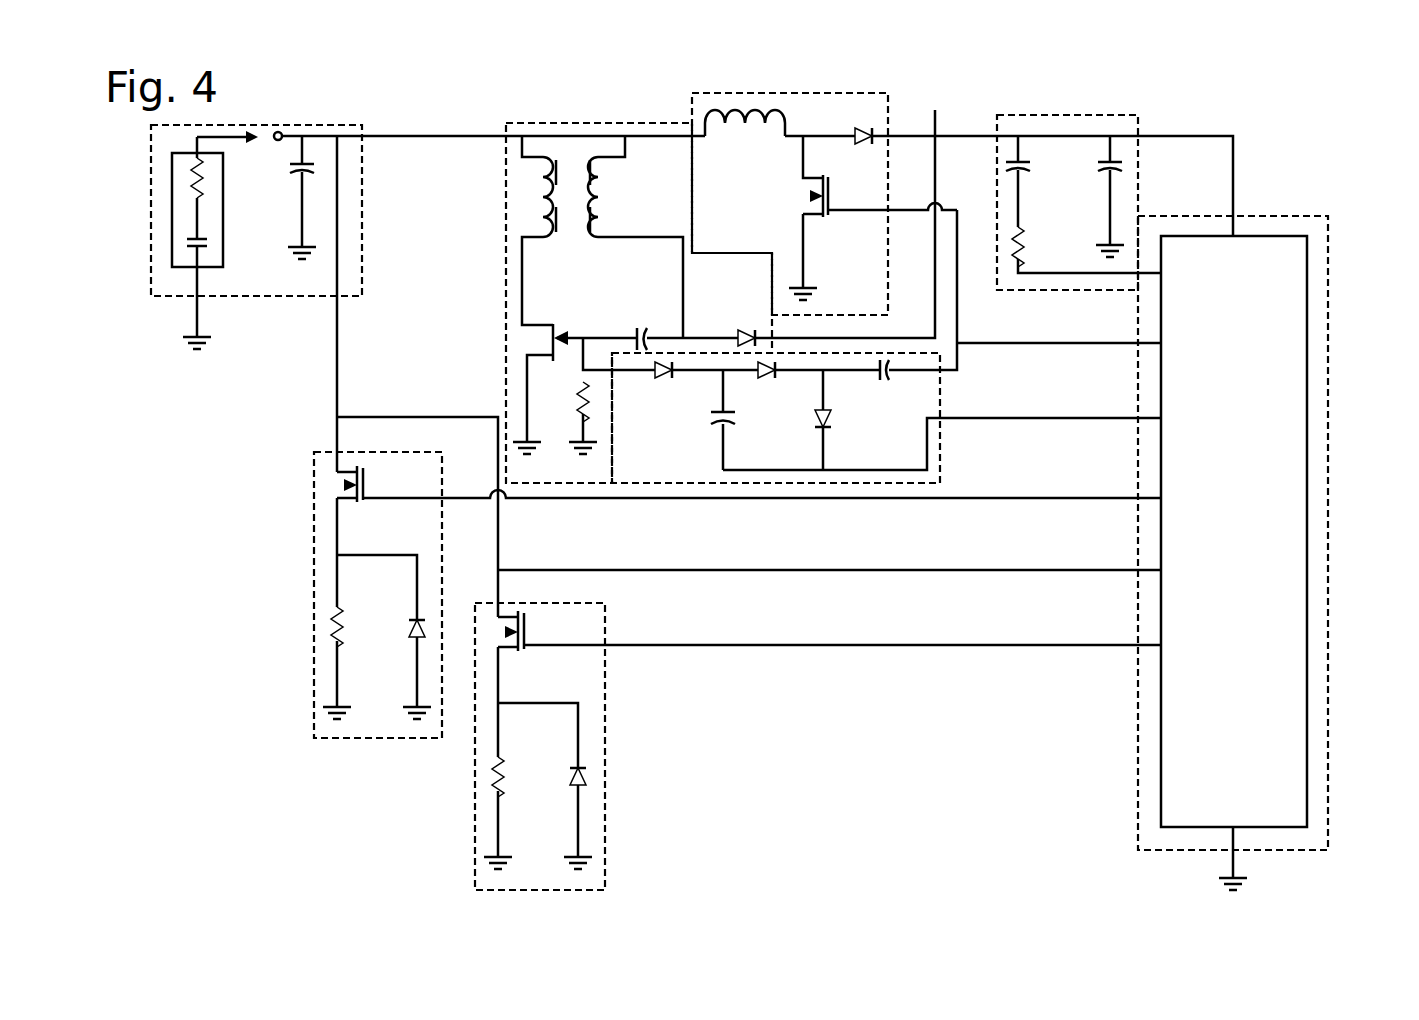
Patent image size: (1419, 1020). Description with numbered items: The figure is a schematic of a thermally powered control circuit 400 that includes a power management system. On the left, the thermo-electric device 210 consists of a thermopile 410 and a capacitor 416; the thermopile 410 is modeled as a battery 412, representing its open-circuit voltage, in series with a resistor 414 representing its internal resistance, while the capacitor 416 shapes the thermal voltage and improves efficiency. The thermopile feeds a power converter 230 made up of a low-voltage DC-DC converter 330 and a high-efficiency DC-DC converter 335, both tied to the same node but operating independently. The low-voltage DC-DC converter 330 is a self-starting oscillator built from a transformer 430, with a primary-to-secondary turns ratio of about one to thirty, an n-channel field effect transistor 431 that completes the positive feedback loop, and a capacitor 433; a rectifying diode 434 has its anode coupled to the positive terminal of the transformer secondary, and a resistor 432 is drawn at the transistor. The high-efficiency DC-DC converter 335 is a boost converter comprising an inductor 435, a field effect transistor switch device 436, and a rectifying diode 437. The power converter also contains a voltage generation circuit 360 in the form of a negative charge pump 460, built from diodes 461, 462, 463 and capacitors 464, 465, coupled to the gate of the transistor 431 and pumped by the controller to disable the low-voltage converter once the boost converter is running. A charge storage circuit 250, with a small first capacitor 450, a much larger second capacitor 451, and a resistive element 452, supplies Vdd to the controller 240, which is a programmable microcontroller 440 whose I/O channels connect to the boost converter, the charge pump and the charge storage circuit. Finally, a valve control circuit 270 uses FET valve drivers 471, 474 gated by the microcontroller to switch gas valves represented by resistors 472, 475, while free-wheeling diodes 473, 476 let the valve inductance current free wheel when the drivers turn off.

The thermally powered control circuit 400 is at (302, 826).
The thermo-electric device 210 is at (293, 102).
The power converter 230 is at (489, 102).
The low-voltage DC-DC converter 330 is at (604, 122).
The high-efficiency DC-DC converter 335 is at (875, 93).
The charge storage circuit 250 is at (1118, 115).
The controller 240 is at (1330, 835).
The valve control circuit 270 is at (474, 788).
The voltage generation circuit 360 is at (942, 465).
The negative charge pump 460 is at (663, 464).
The thermopile 410 is at (223, 245).
The battery 412 is at (205, 240).
The resistor 414 is at (205, 180).
The capacitor 416 is at (299, 172).
The transformer 430 is at (605, 240).
The field effect transistor 431 is at (552, 322).
The resistor 432 is at (580, 398).
The capacitor 433 is at (637, 330).
The rectifying diode 434 is at (738, 332).
The inductor 435 is at (768, 125).
The field effect transistor switch device 436 is at (808, 196).
The rectifying diode 437 is at (866, 145).
The programmable microcontroller 440 is at (1300, 818).
The first capacitor 450 is at (1103, 170).
The second capacitor 451 is at (1024, 166).
The resistive element 452 is at (1025, 245).
The diode 461 is at (660, 380).
The diode 462 is at (766, 380).
The diode 463 is at (831, 420).
The capacitor 464 is at (733, 420).
The capacitor 465 is at (884, 382).
The valve driver 471 is at (364, 490).
The gas valve 472 is at (342, 627).
The free-wheeling diode 473 is at (411, 632).
The valve driver 474 is at (525, 638).
The gas valve 475 is at (504, 775).
The free-wheeling diode 476 is at (573, 775).